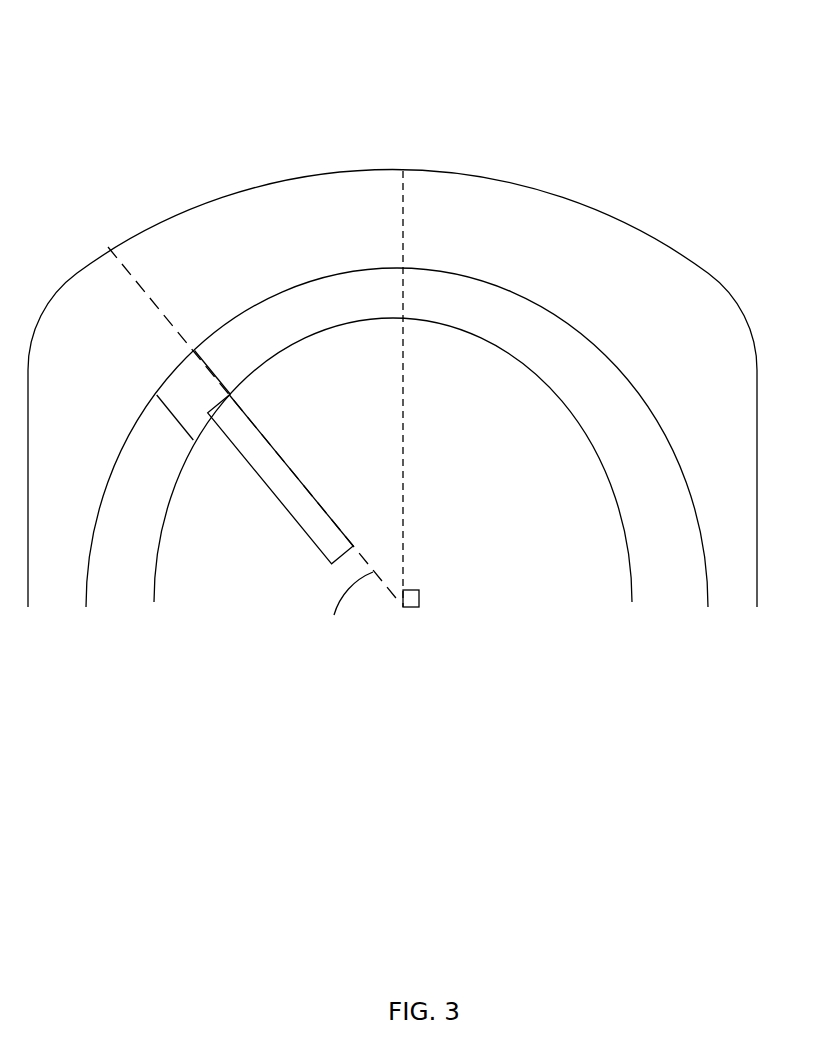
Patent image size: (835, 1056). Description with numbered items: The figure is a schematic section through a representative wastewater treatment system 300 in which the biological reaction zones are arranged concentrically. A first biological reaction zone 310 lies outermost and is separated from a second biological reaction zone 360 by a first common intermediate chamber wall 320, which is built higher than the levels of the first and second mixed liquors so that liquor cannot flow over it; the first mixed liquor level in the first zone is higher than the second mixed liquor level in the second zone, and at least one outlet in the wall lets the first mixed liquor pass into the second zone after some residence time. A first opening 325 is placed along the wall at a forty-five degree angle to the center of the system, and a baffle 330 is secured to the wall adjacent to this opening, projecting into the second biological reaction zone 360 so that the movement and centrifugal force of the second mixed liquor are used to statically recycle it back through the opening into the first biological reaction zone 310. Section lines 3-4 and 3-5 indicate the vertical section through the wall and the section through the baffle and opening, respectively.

The optical element assembly 300 is at (111, 112).
The first biological reaction zone 310 is at (553, 235).
The first common intermediate chamber wall 320 is at (582, 383).
The first opening 325 is at (178, 383).
The baffle 330 is at (300, 457).
The second biological reaction zone 360 is at (393, 460).
The section line 3-4 is at (403, 208).
The section line 3-5 is at (143, 278).